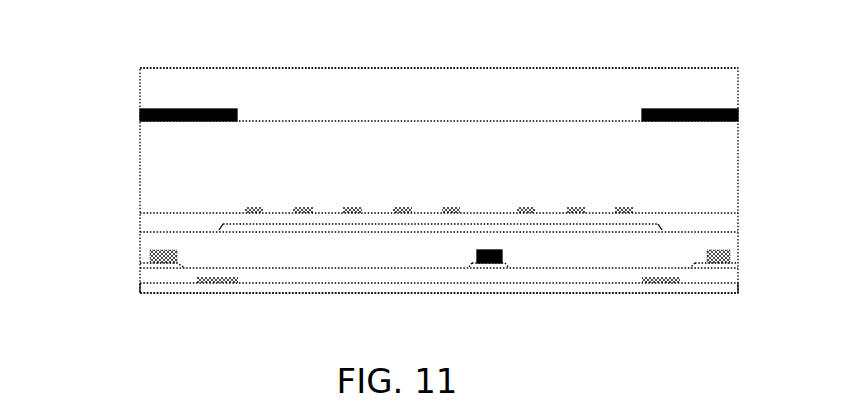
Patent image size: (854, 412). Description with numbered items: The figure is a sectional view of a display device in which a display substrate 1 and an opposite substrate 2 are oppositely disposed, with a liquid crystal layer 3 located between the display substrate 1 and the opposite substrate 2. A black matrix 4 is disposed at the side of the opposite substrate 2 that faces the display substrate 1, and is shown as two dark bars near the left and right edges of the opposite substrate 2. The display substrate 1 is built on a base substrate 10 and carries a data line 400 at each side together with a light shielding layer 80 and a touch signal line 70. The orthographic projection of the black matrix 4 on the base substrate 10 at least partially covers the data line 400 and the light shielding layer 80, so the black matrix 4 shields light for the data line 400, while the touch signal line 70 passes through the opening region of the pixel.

The display substrate 1 is at (138, 237).
The opposite substrate 2 is at (437, 66).
The liquid crystal layer 3 is at (138, 150).
The black matrix 4 is at (205, 108).
The base substrate 10 is at (430, 295).
The touch signal line 70 is at (510, 283).
The light shielding layer 80 is at (228, 284).
The data line 400 is at (150, 267).